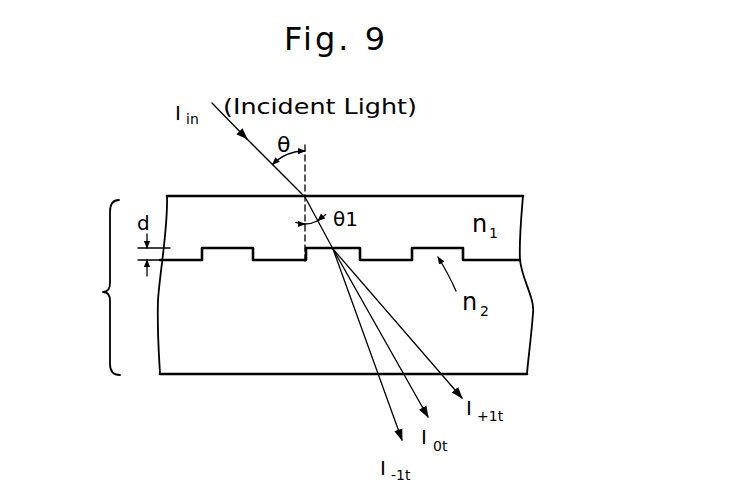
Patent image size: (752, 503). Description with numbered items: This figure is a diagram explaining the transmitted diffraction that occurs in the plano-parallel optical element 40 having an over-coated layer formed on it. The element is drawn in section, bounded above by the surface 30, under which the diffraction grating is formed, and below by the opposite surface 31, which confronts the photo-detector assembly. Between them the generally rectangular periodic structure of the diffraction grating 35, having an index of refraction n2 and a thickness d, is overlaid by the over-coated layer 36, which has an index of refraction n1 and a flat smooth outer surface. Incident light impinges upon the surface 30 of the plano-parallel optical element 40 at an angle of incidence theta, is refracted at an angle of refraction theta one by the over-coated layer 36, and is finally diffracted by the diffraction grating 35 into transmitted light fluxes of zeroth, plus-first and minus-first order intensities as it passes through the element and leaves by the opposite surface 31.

The surface 30 is at (508, 193).
The opposite surface 31 is at (515, 375).
The diffraction grating 35 is at (463, 255).
The over-coated layer 36 is at (514, 201).
The plano-parallel optical element 40 is at (103, 293).